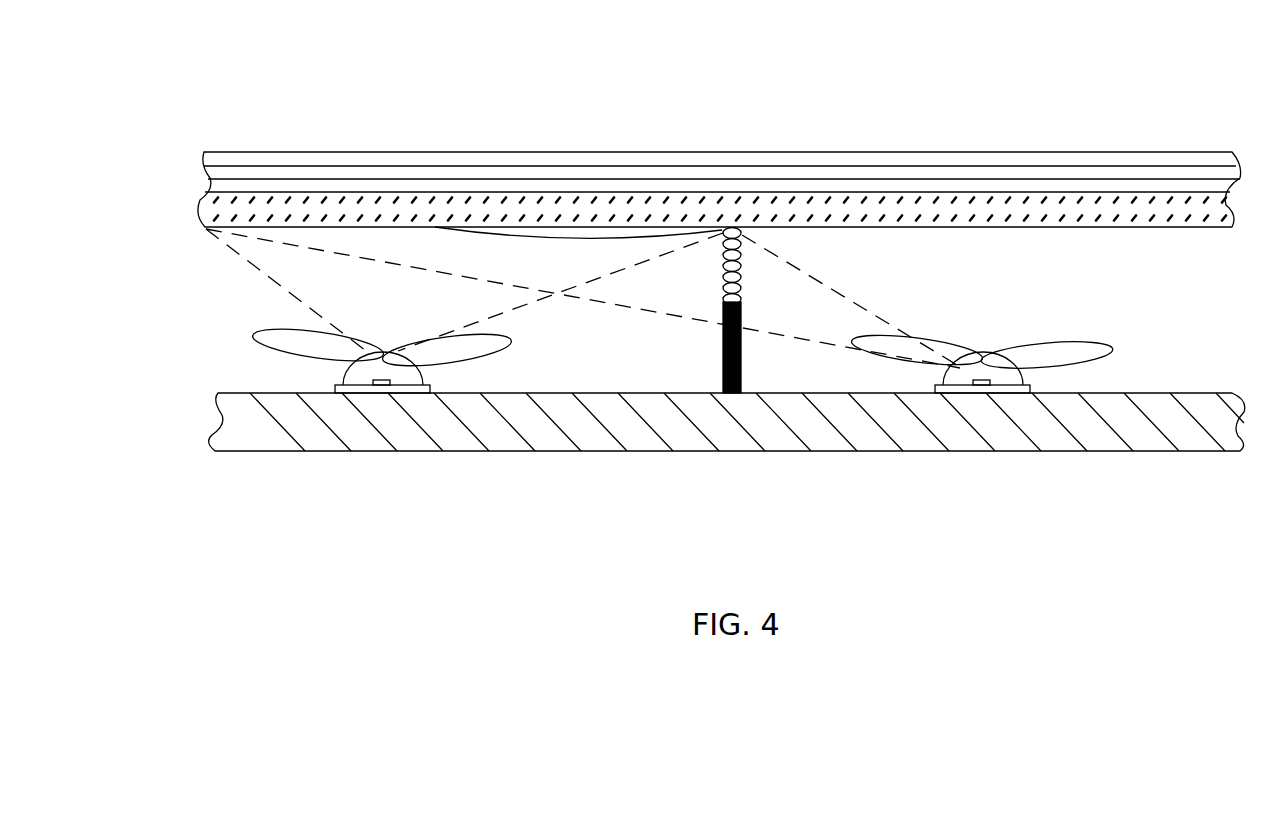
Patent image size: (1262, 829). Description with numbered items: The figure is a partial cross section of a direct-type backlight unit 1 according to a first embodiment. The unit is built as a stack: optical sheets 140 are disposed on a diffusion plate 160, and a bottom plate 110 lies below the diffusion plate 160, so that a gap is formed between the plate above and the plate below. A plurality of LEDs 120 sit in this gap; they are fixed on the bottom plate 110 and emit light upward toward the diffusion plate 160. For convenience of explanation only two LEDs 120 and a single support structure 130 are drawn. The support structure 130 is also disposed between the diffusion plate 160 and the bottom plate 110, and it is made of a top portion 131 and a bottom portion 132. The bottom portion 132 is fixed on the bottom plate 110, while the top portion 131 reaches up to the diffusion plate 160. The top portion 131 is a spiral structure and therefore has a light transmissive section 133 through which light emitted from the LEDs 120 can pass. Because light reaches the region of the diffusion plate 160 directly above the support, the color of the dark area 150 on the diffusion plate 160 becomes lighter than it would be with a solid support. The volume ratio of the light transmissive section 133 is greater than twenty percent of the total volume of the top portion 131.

The direct-type backlight unit 1 is at (250, 87).
The bottom plate 110 is at (242, 423).
The LEDs 120 is at (363, 378).
The support structure 130 is at (830, 384).
The top portion 131 is at (744, 291).
The bottom portion 132 is at (742, 360).
The light transmissive section 133 is at (744, 236).
The optical sheets 140 is at (729, 149).
The dark area 150 is at (572, 232).
The diffusion plate 160 is at (932, 207).